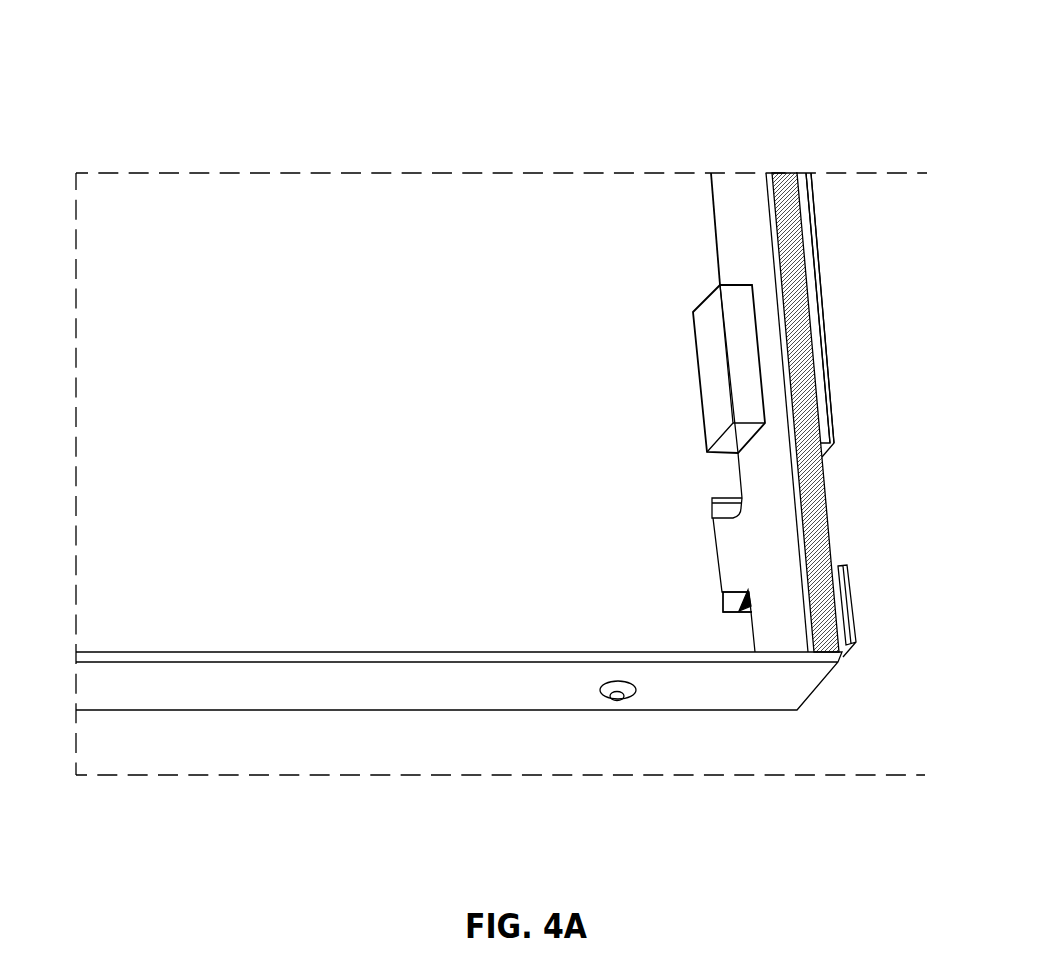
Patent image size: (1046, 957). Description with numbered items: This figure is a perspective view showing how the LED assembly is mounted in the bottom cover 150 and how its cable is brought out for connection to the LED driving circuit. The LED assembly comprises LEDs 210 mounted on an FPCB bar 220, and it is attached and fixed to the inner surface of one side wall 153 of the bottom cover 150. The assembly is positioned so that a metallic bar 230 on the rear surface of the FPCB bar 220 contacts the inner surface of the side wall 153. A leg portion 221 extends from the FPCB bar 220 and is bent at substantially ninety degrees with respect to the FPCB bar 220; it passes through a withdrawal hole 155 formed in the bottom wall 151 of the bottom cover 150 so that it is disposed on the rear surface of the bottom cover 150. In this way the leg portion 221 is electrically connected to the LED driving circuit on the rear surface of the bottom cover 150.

The bottom cover 150 is at (768, 37).
The bottom wall 151 is at (682, 346).
The side wall 153 is at (801, 346).
The withdrawal hole 155 is at (749, 591).
The LED 210 is at (748, 353).
The FPCB bar 220 is at (797, 458).
The leg portion 221 is at (721, 665).
The metallic bar 230 is at (818, 521).